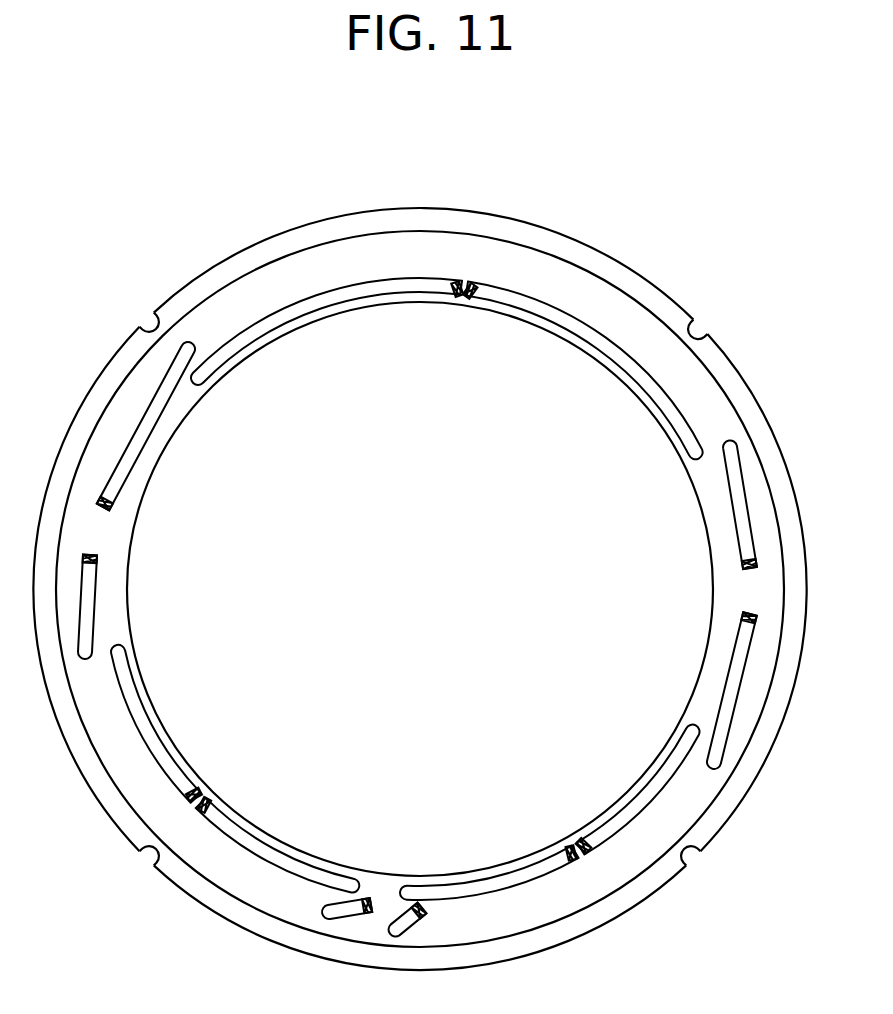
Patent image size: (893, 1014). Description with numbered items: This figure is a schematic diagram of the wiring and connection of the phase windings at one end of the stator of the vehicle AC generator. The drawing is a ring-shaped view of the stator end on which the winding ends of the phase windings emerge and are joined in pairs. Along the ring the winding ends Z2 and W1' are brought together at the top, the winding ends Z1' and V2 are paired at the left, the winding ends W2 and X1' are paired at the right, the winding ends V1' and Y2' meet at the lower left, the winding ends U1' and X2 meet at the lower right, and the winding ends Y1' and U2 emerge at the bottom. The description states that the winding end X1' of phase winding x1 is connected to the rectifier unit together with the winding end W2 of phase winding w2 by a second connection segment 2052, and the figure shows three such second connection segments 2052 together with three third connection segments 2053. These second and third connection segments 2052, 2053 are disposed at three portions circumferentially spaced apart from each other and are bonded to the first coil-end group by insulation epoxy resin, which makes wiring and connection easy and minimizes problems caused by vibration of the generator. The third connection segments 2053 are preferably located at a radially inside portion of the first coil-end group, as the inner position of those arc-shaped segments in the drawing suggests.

The second connection segment 2052 is at (417, 639).
The third connection segment 2053 is at (407, 589).
The coil Z1' of first coil group Z1' is at (163, 439).
The coil V2 of first coil group V2 is at (97, 560).
The winding end W2 is at (745, 574).
The winding end X1' is at (689, 689).
The coil Y1' of first coil group Y1' is at (352, 852).
The coil U2 of first coil group U2 is at (418, 904).
The coil Z2 of second coil group Z2 is at (458, 296).
The coil W1' of second coil group W1' is at (583, 371).
The coil V1' of second coil group V1' is at (168, 724).
The coil Y2' of second coil group Y2' is at (277, 800).
The coil U1' of second coil group U1' is at (491, 824).
The coil X2 of second coil group X2 is at (584, 846).